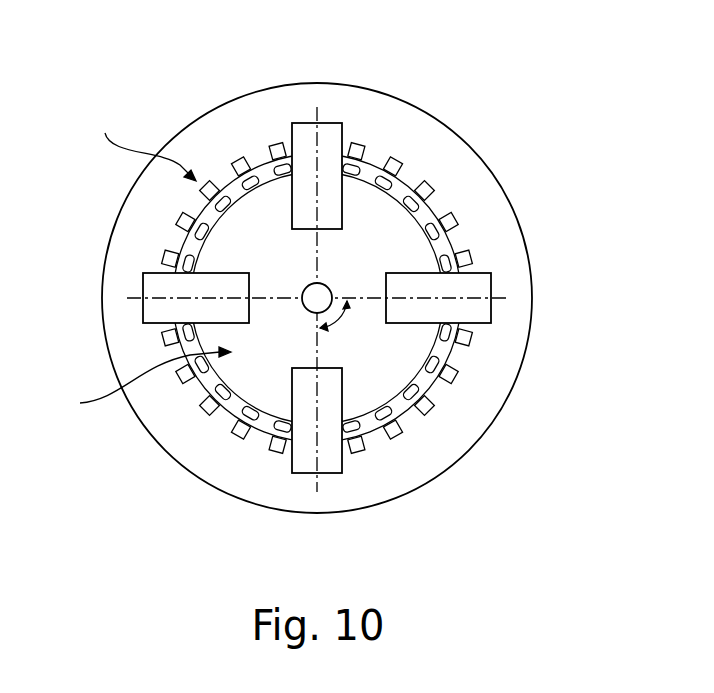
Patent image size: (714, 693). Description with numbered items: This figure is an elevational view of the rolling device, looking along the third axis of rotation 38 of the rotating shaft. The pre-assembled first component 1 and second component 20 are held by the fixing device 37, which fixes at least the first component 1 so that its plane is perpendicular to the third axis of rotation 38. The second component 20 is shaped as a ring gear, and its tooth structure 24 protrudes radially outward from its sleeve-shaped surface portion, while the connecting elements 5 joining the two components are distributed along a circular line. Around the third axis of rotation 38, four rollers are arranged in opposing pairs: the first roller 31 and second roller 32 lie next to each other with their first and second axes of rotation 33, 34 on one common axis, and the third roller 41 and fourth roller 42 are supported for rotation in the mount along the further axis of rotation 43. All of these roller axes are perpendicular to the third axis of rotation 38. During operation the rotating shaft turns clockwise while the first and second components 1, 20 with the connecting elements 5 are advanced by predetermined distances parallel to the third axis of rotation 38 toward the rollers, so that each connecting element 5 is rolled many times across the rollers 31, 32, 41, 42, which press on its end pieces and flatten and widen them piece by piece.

The first component 1 is at (508, 252).
The connecting elements 5 is at (290, 150).
The second component 20 is at (407, 180).
The tooth structure 24 is at (143, 146).
The first roller 31 is at (152, 310).
The second roller 32 is at (480, 287).
The first axis of rotation 33 is at (135, 297).
The second axis of rotation 34 is at (500, 300).
The fixing device 37 is at (139, 383).
The third axis of rotation 38 is at (325, 290).
The third roller 41 is at (335, 138).
The fourth roller 42 is at (298, 462).
The further axis of rotation 43 is at (318, 116).